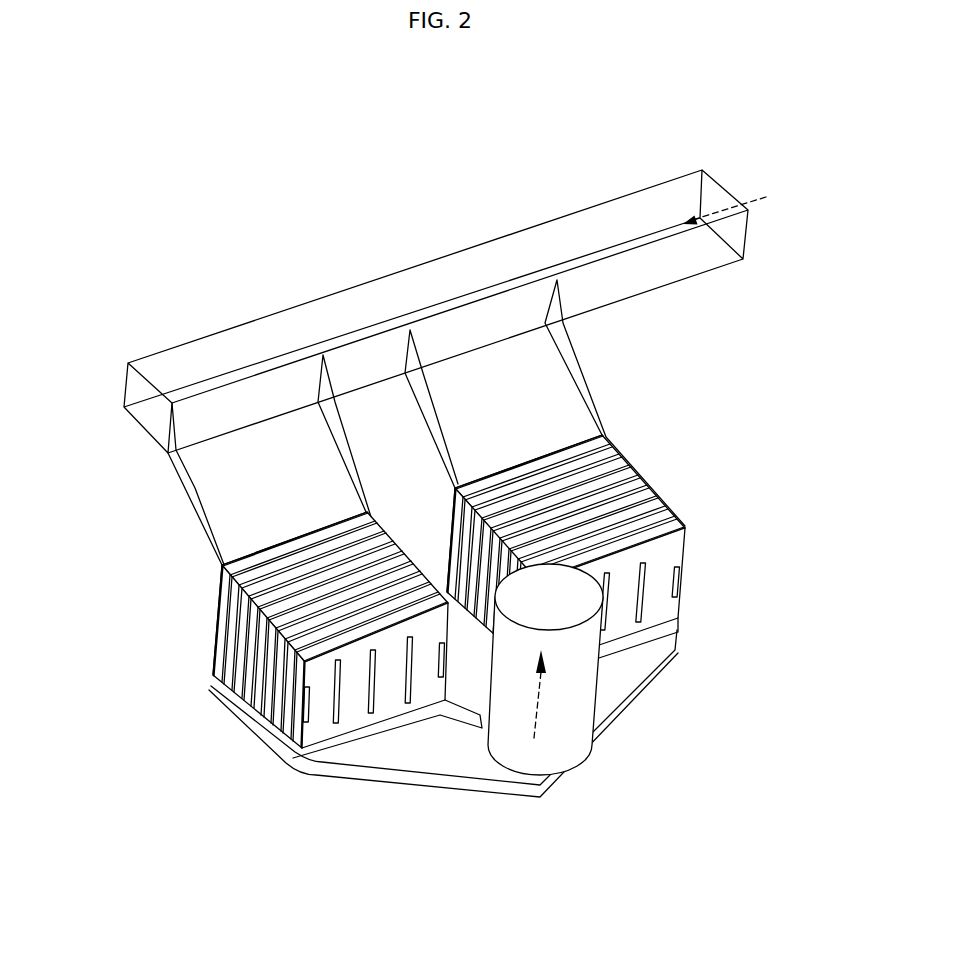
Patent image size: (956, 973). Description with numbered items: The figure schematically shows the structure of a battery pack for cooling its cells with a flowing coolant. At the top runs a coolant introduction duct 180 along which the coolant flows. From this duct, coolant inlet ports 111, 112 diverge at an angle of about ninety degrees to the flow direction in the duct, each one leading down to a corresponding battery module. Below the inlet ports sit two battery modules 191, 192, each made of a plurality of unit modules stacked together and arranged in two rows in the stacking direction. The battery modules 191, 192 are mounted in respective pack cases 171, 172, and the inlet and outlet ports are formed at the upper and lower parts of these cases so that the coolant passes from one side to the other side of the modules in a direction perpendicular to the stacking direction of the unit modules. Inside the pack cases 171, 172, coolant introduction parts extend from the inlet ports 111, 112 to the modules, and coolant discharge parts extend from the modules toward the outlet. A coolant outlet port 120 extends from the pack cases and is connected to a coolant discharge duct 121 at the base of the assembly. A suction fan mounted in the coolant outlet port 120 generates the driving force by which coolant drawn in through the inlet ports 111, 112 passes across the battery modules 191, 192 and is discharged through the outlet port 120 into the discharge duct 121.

The coolant introduction duct 180 is at (332, 313).
The coolant inlet port 111 is at (217, 507).
The coolant inlet port 112 is at (568, 402).
The battery module 191 is at (214, 598).
The pack case 171 is at (315, 728).
The battery module 192 is at (687, 516).
The pack case 172 is at (660, 607).
The coolant discharge duct 121 is at (605, 688).
The coolant outlet port 120 is at (567, 773).